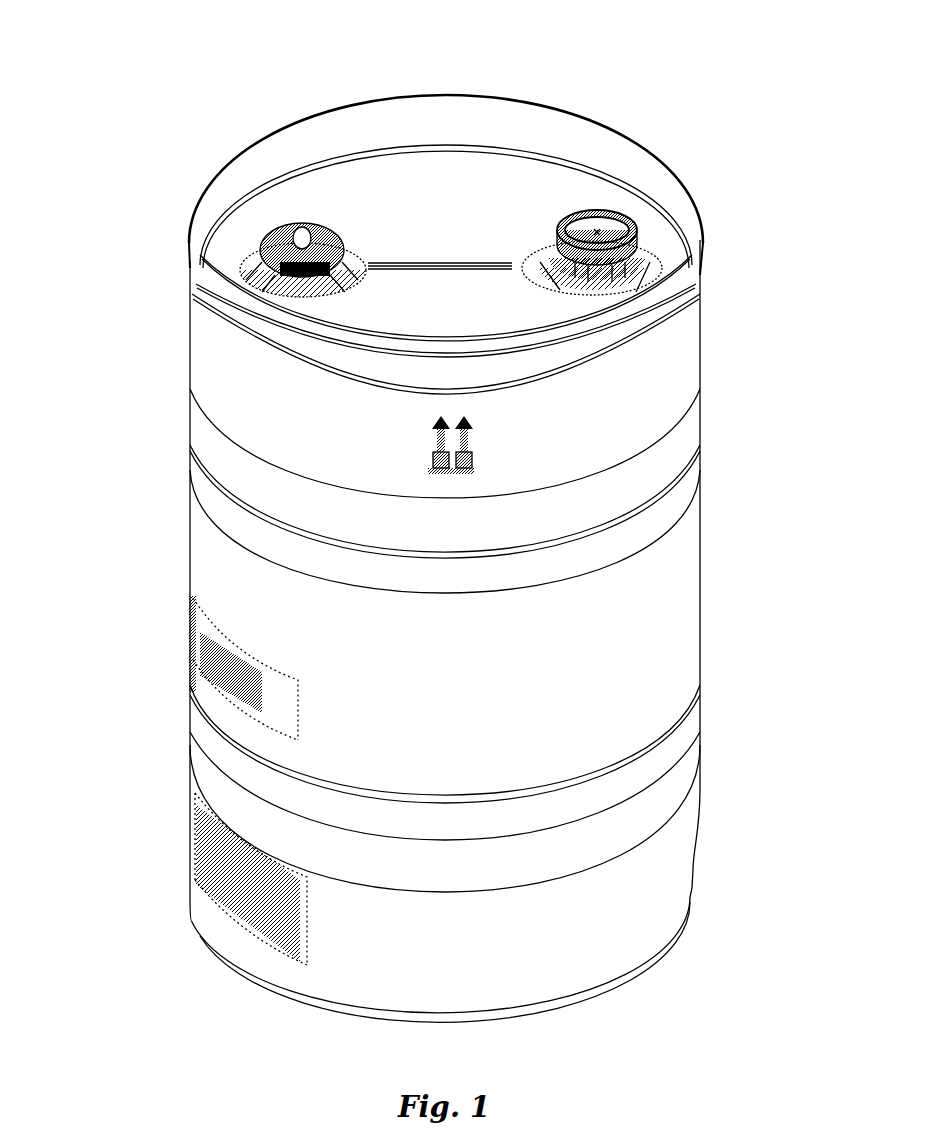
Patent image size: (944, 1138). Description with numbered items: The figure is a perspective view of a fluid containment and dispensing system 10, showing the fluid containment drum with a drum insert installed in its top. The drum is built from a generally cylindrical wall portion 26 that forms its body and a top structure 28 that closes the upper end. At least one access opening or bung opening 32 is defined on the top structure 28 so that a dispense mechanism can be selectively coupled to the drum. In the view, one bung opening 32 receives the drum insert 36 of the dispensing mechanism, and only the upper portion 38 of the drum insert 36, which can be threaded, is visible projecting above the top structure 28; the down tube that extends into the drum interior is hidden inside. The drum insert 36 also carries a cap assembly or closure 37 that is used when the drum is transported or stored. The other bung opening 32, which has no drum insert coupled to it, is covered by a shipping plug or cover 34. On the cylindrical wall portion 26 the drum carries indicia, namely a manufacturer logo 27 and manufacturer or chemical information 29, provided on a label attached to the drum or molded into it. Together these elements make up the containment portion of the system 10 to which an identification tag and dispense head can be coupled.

The fluid containment and dispensing system 10 is at (592, 98).
The generally cylindrical wall portion 26 is at (658, 603).
The manufacturer logo 27 is at (195, 628).
The top structure 28 is at (533, 187).
The manufacturer or chemical information 29 is at (192, 846).
The bung opening 32 is at (632, 322).
The shipping plug or cover 34 is at (275, 245).
The drum insert 36 is at (662, 272).
The cap assembly or closure 37 is at (618, 232).
The upper portion 38 is at (692, 266).